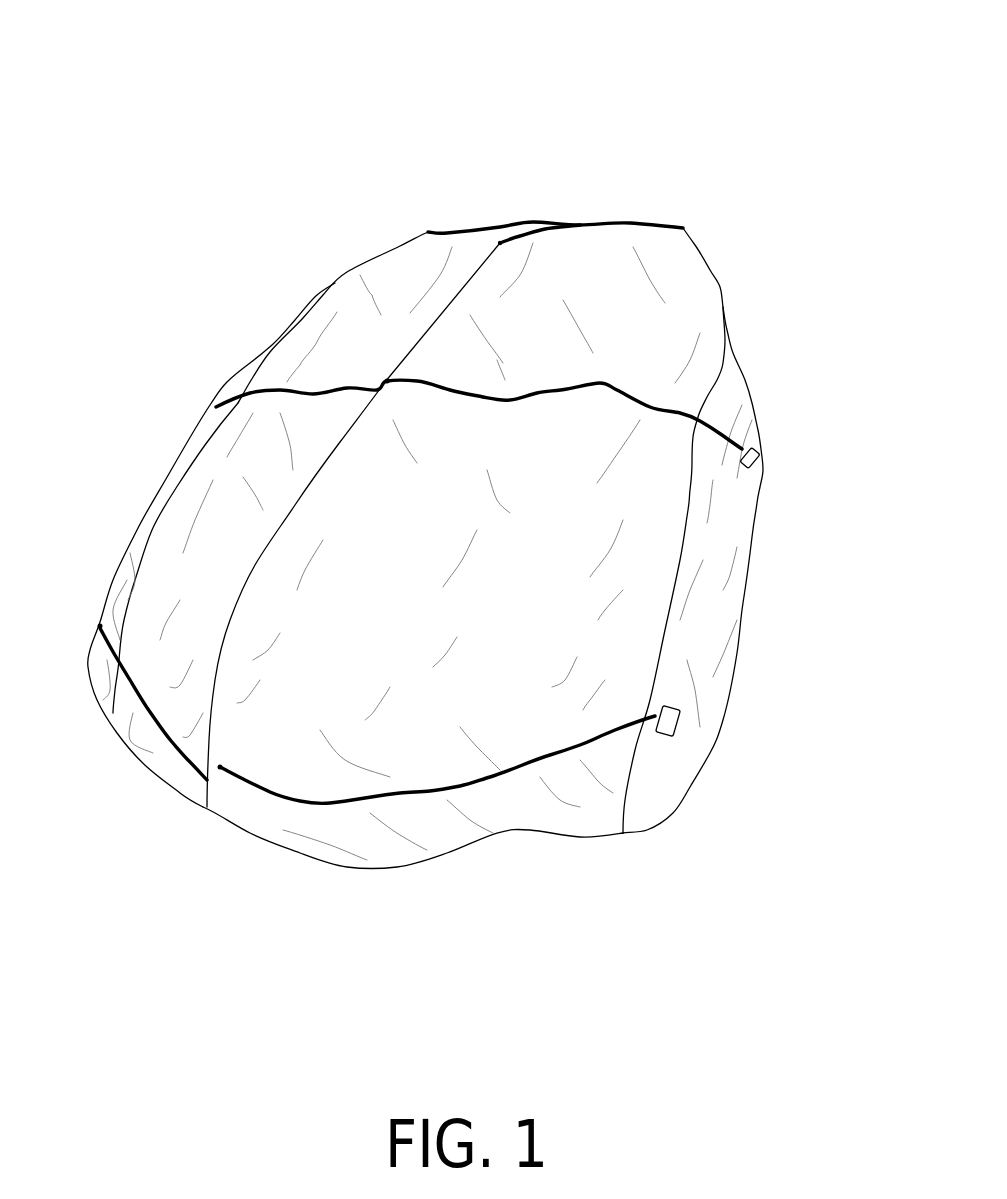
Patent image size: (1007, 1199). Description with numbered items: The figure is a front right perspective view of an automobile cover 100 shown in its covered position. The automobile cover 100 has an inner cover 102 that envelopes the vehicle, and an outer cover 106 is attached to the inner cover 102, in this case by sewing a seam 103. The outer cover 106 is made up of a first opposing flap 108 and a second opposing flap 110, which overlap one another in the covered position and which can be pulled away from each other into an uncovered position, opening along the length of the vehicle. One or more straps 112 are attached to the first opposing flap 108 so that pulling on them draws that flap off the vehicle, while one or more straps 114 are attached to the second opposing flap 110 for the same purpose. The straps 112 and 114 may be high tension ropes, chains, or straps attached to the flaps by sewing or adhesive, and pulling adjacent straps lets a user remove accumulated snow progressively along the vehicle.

The automobile cover 100 is at (157, 70).
The inner cover 102 is at (708, 687).
The seam 103 is at (258, 375).
The outer cover 106 is at (547, 288).
The first opposing flap 108 is at (653, 353).
The second opposing flap 110 is at (333, 353).
The straps 112 is at (573, 222).
The straps 114 is at (428, 233).